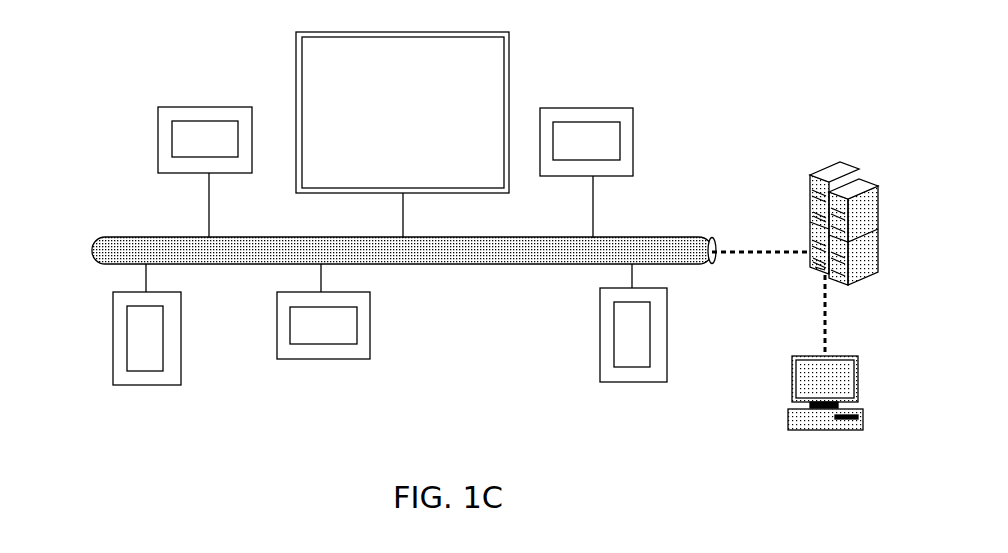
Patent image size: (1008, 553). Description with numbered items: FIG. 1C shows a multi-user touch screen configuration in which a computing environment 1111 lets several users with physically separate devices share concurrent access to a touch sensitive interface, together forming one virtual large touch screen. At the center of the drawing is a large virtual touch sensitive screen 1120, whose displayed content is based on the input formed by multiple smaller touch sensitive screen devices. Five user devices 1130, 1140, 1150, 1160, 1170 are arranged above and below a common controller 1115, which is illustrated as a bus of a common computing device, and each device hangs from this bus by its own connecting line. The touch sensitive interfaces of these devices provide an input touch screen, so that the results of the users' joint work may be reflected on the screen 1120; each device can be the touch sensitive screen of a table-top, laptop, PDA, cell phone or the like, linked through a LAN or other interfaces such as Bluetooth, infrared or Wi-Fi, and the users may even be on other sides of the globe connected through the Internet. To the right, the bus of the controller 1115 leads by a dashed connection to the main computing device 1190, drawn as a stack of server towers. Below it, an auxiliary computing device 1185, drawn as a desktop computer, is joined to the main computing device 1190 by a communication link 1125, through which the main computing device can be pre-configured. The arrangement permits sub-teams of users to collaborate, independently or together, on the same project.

The computing environment 1111 is at (83, 67).
The controller 1115 is at (710, 242).
The virtual touch sensitive screen 1120 is at (297, 110).
The device 1130 is at (217, 107).
The device 1140 is at (602, 108).
The device 1150 is at (698, 325).
The device 1160 is at (317, 360).
The device 1170 is at (113, 328).
The main computing device 1190 is at (817, 175).
The communication link 1125 is at (829, 321).
The auxiliary computing device 1185 is at (802, 357).